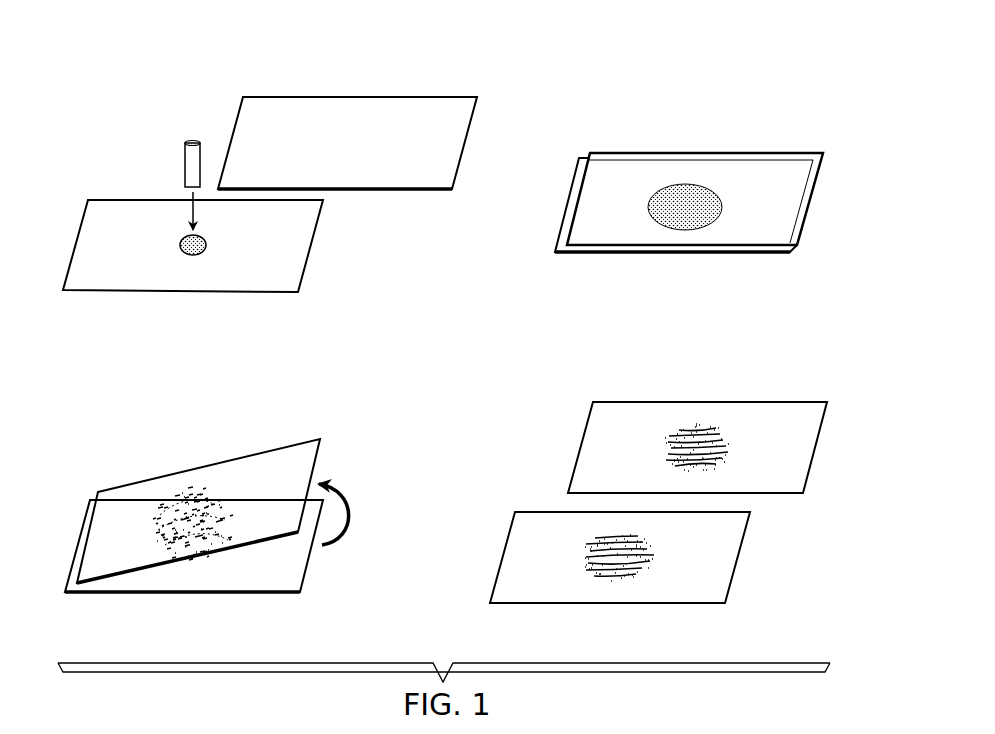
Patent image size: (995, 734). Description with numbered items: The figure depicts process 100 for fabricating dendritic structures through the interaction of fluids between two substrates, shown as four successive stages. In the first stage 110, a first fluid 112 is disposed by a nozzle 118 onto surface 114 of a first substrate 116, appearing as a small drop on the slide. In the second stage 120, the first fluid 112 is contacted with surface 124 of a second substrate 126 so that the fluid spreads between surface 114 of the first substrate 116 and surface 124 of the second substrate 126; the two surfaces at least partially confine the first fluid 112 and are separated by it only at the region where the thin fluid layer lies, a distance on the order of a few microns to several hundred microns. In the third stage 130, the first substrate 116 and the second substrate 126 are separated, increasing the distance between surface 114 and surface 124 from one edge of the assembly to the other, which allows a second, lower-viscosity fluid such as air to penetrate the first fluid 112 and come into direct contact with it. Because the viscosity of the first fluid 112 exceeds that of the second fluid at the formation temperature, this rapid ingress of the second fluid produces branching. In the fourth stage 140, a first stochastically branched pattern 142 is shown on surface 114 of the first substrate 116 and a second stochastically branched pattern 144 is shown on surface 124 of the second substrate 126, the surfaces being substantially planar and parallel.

The process 100 is at (153, 60).
The first step 110 is at (132, 147).
The first fluid 112 is at (180, 245).
The surface of first substrate 114 is at (272, 273).
The first substrate 116 is at (112, 200).
The nozzle 118 is at (193, 142).
The second step 120 is at (770, 117).
The surface of second substrate 124 is at (427, 200).
The second substrate 126 is at (358, 97).
The third step 130 is at (168, 417).
The fourth step 140 is at (783, 367).
The first stochastically branched pattern 142 is at (647, 555).
The second stochastically branched pattern 144 is at (722, 445).